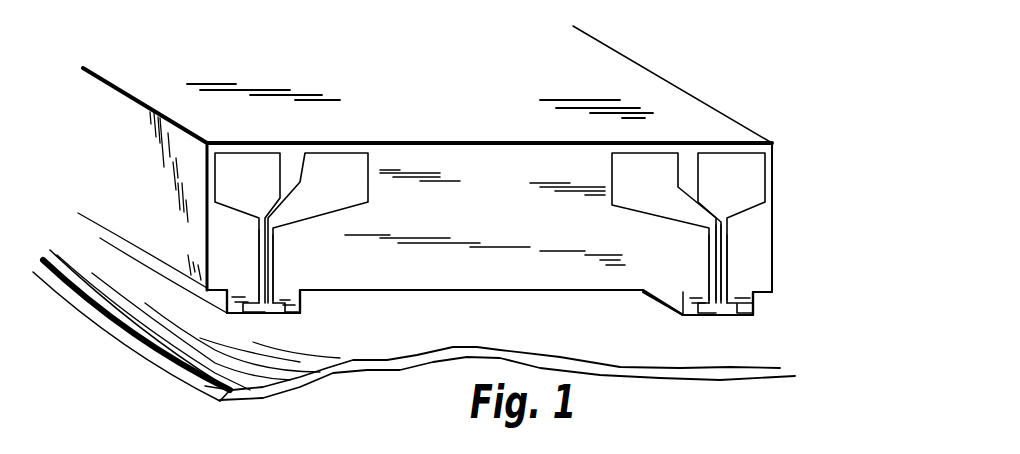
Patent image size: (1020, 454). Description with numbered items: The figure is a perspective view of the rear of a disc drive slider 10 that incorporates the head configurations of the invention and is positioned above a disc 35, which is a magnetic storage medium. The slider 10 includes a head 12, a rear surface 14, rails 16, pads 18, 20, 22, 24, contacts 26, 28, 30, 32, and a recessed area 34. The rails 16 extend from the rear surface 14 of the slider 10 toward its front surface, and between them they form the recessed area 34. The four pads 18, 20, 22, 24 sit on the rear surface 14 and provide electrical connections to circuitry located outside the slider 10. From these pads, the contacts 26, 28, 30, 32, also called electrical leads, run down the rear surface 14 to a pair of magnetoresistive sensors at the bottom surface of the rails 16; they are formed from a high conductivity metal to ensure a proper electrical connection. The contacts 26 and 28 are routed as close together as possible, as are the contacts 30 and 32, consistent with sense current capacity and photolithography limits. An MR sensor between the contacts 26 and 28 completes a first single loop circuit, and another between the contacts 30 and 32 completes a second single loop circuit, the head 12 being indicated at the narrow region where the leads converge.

The disc drive slider 10 is at (723, 70).
The head 12 is at (731, 229).
The rear surface 14 is at (513, 213).
The rails 16 is at (283, 300).
The pad 18 is at (263, 192).
The pad 20 is at (350, 196).
The pad 22 is at (660, 195).
The pad 24 is at (752, 192).
The contact 26 is at (257, 243).
The contact 28 is at (275, 256).
The contact 30 is at (708, 255).
The contact 32 is at (728, 252).
The recessed area 34 is at (470, 297).
The disc 35 is at (207, 393).